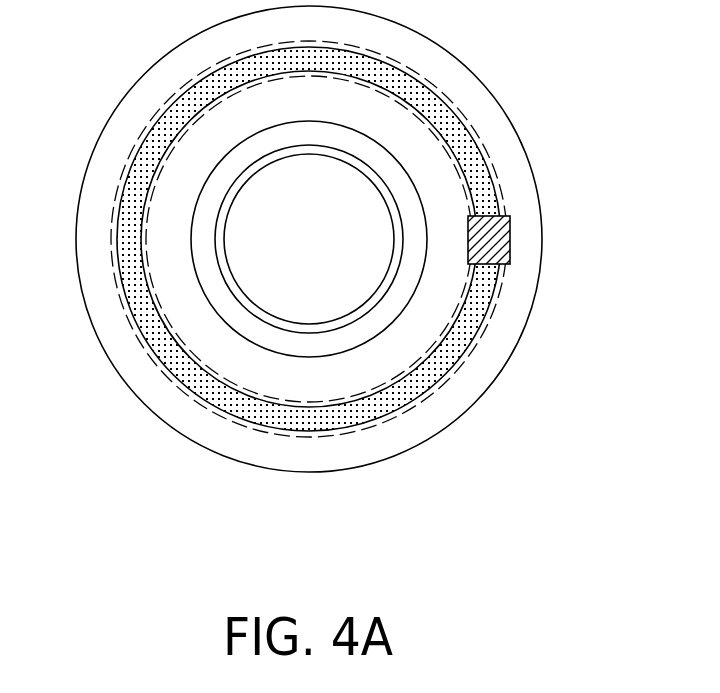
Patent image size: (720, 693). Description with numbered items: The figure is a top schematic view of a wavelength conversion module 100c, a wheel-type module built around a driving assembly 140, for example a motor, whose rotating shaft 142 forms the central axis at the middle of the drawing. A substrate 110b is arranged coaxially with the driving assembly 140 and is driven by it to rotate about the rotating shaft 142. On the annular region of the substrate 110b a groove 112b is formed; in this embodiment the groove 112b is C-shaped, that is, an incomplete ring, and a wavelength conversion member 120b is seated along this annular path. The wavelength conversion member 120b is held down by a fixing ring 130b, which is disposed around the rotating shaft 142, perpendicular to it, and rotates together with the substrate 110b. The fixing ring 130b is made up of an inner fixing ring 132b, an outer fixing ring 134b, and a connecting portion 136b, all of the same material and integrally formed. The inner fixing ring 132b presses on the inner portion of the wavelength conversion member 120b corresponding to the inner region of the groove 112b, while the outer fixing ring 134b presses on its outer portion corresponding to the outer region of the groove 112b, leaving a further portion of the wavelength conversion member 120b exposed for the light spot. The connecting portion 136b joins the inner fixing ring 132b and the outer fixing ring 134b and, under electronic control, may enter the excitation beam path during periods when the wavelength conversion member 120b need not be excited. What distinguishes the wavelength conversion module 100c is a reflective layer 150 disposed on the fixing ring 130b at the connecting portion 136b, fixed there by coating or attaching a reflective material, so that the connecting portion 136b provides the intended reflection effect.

The wavelength conversion module 100c is at (350, 277).
The substrate 110b is at (533, 151).
The groove 112b is at (118, 205).
The wavelength conversion member 120b is at (425, 392).
The fixing ring 130b is at (394, 239).
The inner fixing ring 132b is at (452, 290).
The outer fixing ring 134b is at (513, 198).
The connecting portion 136b is at (513, 244).
The driving assembly 140 is at (276, 312).
The rotating shaft 142 is at (278, 272).
The reflective layer 150 is at (488, 214).